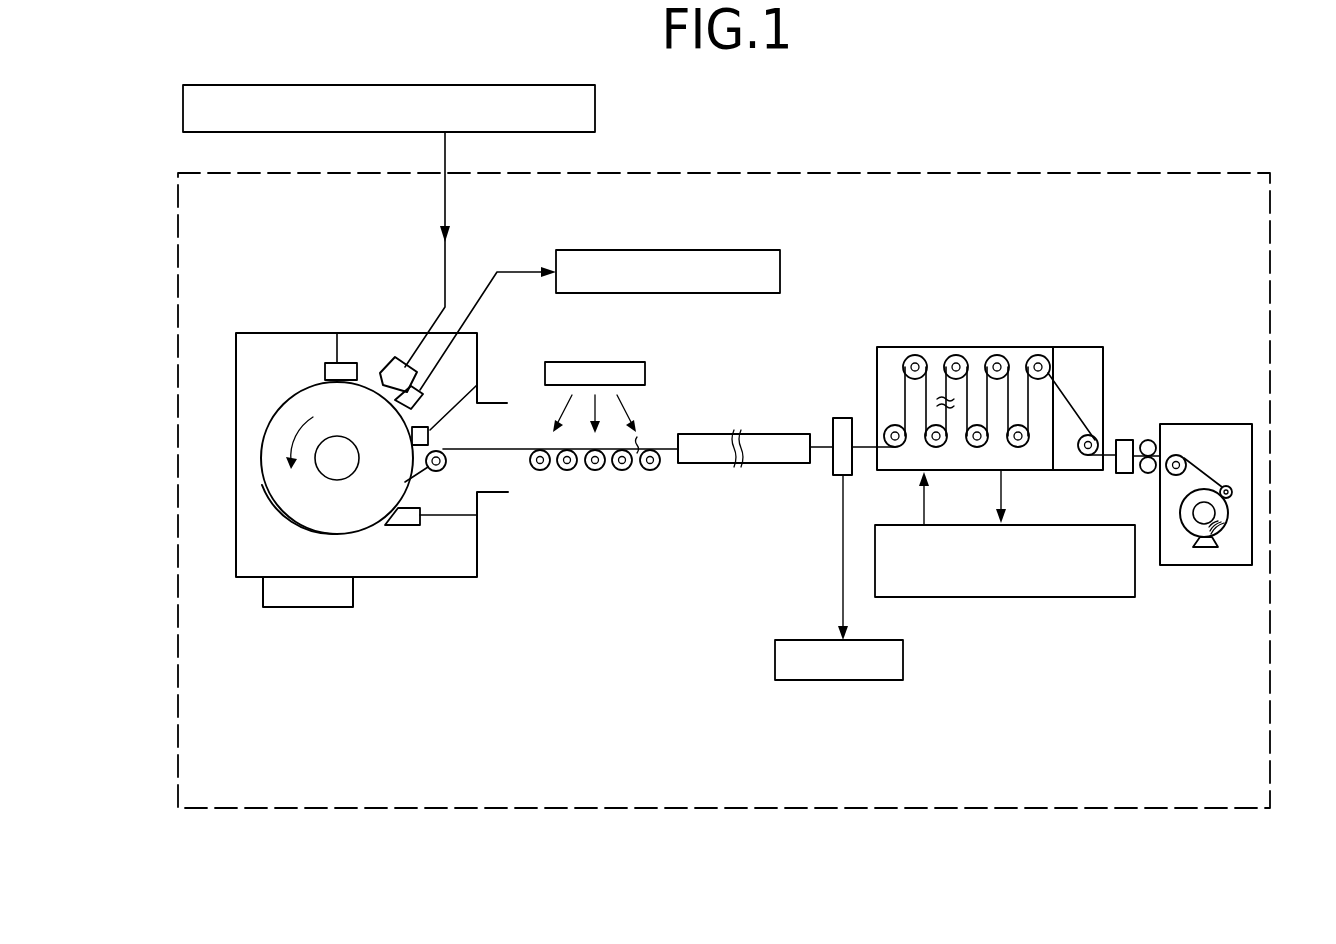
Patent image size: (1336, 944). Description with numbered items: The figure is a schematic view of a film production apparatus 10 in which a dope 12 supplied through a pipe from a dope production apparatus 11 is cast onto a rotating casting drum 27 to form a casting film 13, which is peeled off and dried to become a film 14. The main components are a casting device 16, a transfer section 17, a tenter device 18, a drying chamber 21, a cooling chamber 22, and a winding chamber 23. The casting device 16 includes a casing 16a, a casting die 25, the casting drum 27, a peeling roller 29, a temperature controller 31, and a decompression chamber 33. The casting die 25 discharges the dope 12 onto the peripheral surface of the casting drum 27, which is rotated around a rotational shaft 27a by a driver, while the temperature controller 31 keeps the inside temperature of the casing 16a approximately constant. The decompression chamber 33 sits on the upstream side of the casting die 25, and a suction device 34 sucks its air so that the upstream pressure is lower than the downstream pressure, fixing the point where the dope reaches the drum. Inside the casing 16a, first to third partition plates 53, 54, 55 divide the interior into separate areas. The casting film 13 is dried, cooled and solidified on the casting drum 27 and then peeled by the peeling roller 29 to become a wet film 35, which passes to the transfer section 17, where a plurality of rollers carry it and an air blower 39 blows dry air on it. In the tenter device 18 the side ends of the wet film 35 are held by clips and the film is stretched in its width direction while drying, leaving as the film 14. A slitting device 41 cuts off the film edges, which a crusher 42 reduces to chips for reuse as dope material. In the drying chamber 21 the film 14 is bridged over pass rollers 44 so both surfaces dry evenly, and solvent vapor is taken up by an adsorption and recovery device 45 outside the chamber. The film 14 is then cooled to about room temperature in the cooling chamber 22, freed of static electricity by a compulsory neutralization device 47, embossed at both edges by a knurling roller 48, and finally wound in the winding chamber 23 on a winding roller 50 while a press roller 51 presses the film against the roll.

The film production apparatus 10 is at (727, 170).
The dope production apparatus 11 is at (598, 105).
The dope 12 is at (447, 212).
The casting film 13 is at (262, 485).
The film 14 is at (818, 446).
The casting device 16 is at (232, 388).
The casing 16a is at (480, 535).
The transfer section 17 is at (527, 471).
The tenter device 18 is at (774, 433).
The drying chamber 21 is at (1012, 347).
The cooling chamber 22 is at (1075, 347).
The winding chamber 23 is at (1212, 424).
The casting die 25 is at (388, 362).
The casting drum 27 is at (350, 513).
The rotational shaft 27a is at (337, 480).
The peeling roller 29 is at (447, 459).
The temperature controller 31 is at (310, 608).
The decompression chamber 33 is at (421, 403).
The suction device 34 is at (742, 250).
The wet film 35 is at (505, 449).
The air blower 39 is at (647, 372).
The slitting device 41 is at (841, 418).
The crusher 42 is at (845, 683).
The pass rollers 44 is at (993, 356).
The adsorption and recovery device 45 is at (965, 598).
The compulsory neutralization device 47 is at (1121, 439).
The knurling roller 48 is at (1147, 440).
The winding roller 50 is at (1207, 547).
The press roller 51 is at (1226, 486).
The first partition plate 53 is at (445, 418).
The second partition plate 54 is at (335, 348).
The third partition plate 55 is at (452, 516).